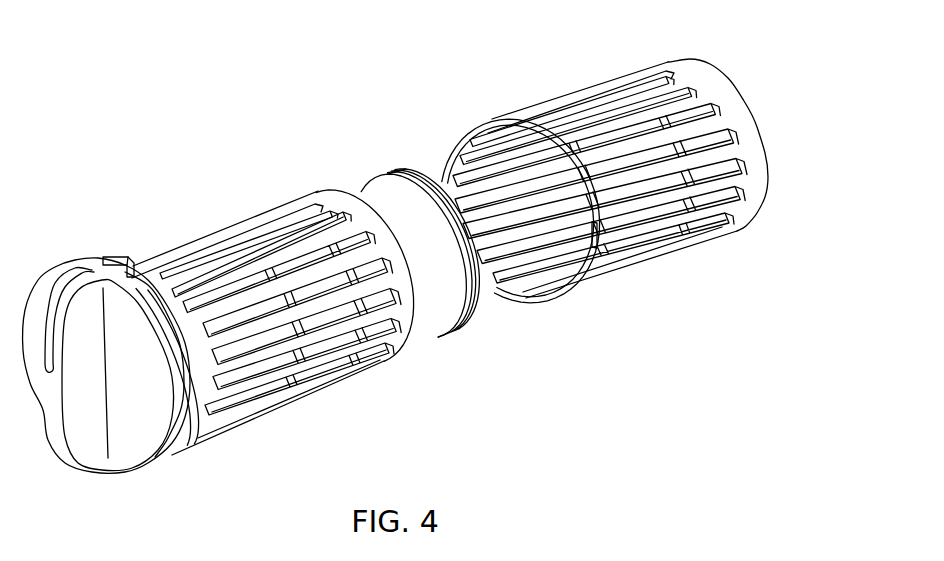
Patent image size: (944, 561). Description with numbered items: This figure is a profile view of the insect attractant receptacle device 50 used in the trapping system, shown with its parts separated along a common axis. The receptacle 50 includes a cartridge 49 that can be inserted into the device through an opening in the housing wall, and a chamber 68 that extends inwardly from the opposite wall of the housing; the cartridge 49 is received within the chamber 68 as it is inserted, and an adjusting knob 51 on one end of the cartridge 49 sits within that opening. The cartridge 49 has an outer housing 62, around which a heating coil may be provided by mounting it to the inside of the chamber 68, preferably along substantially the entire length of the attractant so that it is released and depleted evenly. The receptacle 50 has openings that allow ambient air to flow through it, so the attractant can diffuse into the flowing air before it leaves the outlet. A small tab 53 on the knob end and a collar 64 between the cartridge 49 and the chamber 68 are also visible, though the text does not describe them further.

The cartridge 49 is at (386, 366).
The insect attractant receptacle device 50 is at (222, 200).
The adjusting knob 51 is at (124, 453).
The locking tab 53 is at (114, 256).
The outer housing 62 is at (248, 424).
The collar flange 64 is at (449, 338).
The chamber 68 is at (646, 263).